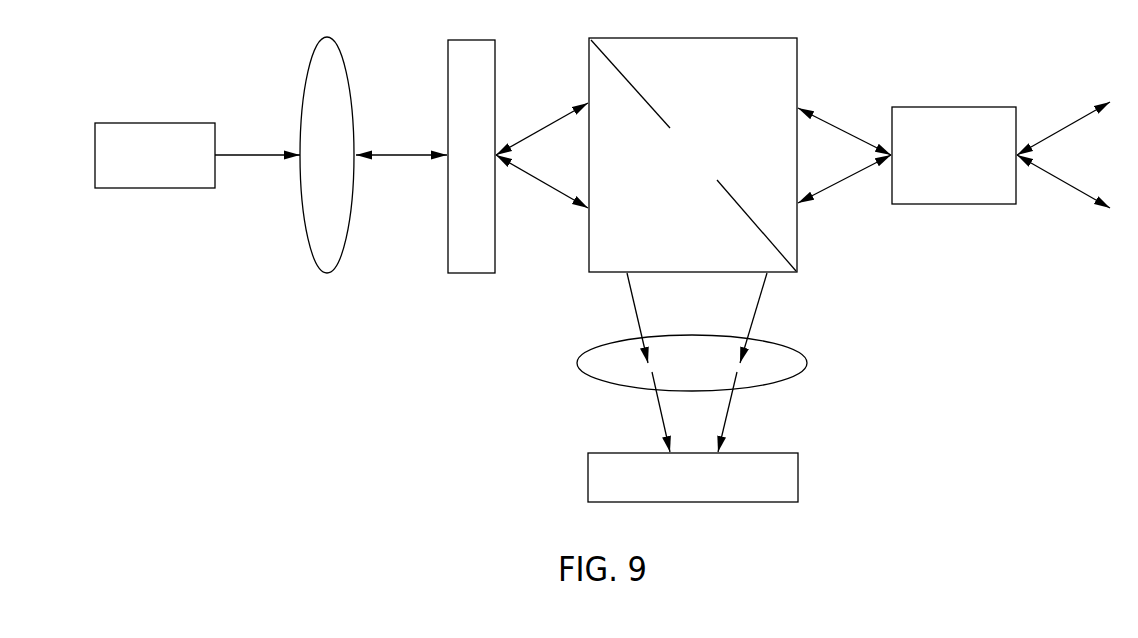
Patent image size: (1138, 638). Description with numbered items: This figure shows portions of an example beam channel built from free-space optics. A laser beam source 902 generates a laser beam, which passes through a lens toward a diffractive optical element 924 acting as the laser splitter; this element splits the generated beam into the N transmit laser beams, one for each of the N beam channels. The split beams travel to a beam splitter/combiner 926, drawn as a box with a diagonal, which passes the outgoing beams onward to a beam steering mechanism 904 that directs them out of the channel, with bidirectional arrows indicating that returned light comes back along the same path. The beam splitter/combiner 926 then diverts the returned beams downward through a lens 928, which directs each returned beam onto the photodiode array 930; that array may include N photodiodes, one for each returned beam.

The laser beam source 902 is at (155, 122).
The diffractive optical element 924 is at (472, 39).
The beam splitter/combiner 926 is at (692, 37).
The beam steering mechanism 904 is at (953, 106).
The lens 928 is at (808, 362).
The photodiode array 930 is at (798, 477).